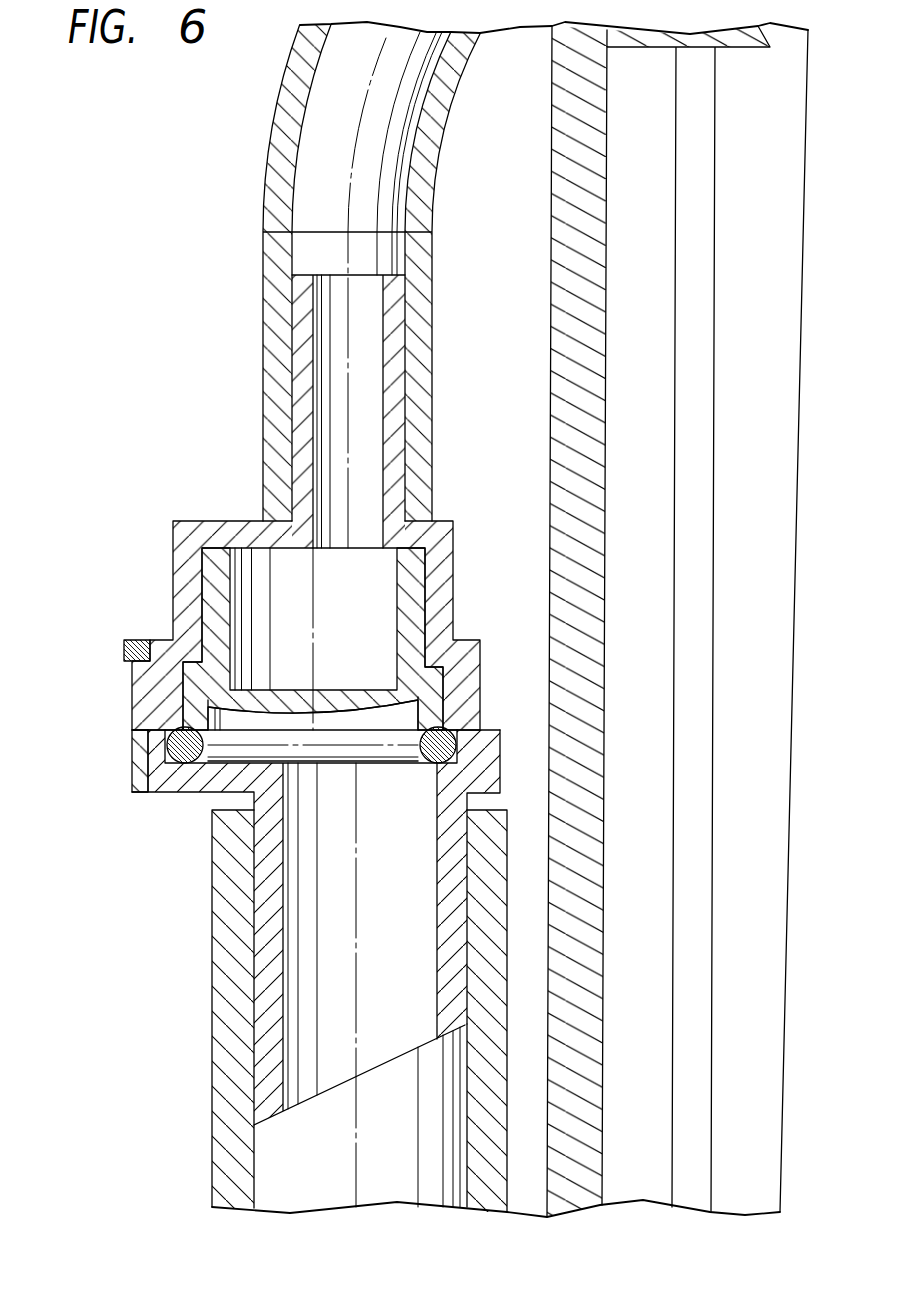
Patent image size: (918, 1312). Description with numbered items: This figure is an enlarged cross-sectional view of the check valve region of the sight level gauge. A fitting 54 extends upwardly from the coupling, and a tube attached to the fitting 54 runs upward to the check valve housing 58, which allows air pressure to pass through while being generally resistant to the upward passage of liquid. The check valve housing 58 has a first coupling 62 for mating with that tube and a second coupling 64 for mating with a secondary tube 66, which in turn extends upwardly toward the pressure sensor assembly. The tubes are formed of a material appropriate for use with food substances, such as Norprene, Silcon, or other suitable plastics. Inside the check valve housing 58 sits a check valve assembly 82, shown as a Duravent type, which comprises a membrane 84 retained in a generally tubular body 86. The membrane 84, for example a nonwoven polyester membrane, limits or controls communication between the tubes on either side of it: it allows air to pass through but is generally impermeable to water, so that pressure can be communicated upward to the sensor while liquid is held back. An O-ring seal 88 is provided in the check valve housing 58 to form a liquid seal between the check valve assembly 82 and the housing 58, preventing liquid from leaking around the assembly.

The fitting 54 is at (232, 1112).
The check valve housing 58 is at (81, 708).
The first coupling 62 is at (268, 953).
The second coupling 64 is at (300, 354).
The secondary tube 66 is at (283, 168).
The check valve assembly 82 is at (182, 600).
The membrane 84 is at (290, 703).
The tubular body 86 is at (207, 570).
The O-ring seal 88 is at (183, 746).